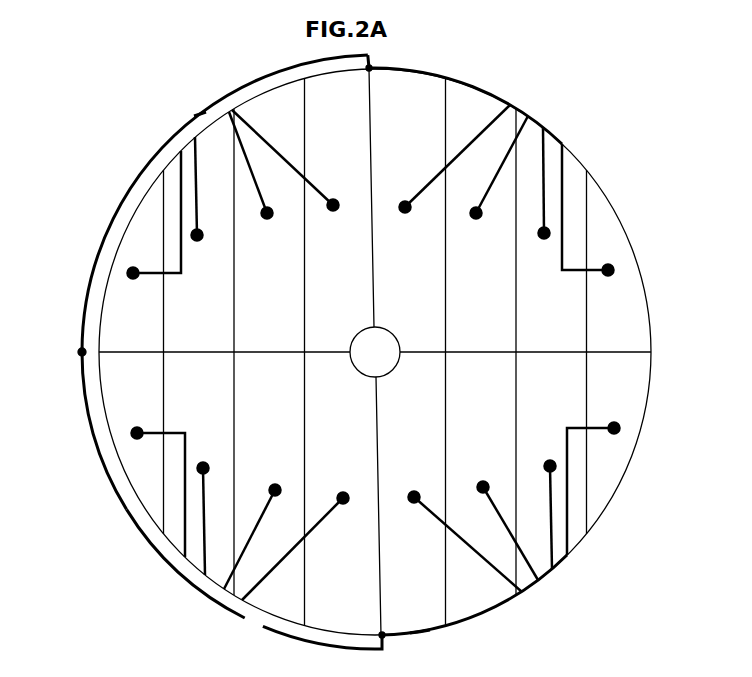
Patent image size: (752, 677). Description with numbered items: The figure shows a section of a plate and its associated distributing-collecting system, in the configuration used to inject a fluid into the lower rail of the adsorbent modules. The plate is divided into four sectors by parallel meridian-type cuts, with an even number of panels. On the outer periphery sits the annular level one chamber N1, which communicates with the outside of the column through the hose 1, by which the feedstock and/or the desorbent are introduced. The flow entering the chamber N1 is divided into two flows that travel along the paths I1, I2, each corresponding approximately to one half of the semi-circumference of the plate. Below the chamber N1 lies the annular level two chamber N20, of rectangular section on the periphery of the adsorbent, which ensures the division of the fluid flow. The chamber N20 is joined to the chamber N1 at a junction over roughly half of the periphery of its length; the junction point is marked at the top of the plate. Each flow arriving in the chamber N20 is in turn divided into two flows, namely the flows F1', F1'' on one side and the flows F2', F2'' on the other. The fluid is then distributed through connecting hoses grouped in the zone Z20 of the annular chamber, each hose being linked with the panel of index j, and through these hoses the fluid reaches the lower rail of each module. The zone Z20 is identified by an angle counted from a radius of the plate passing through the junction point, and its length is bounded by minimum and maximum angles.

The hose 1 is at (68, 352).
The index of a panel j is at (387, 55).
The annular level 1 chamber N1 is at (117, 486).
The annular level 2 chamber N20 is at (200, 115).
The path I1 is at (132, 544).
The path I2 is at (114, 190).
The flow F1' is at (474, 563).
The flow F1'' is at (299, 578).
The flow F2' is at (491, 149).
The flow F2'' is at (284, 121).
The zone Z20 is at (587, 571).